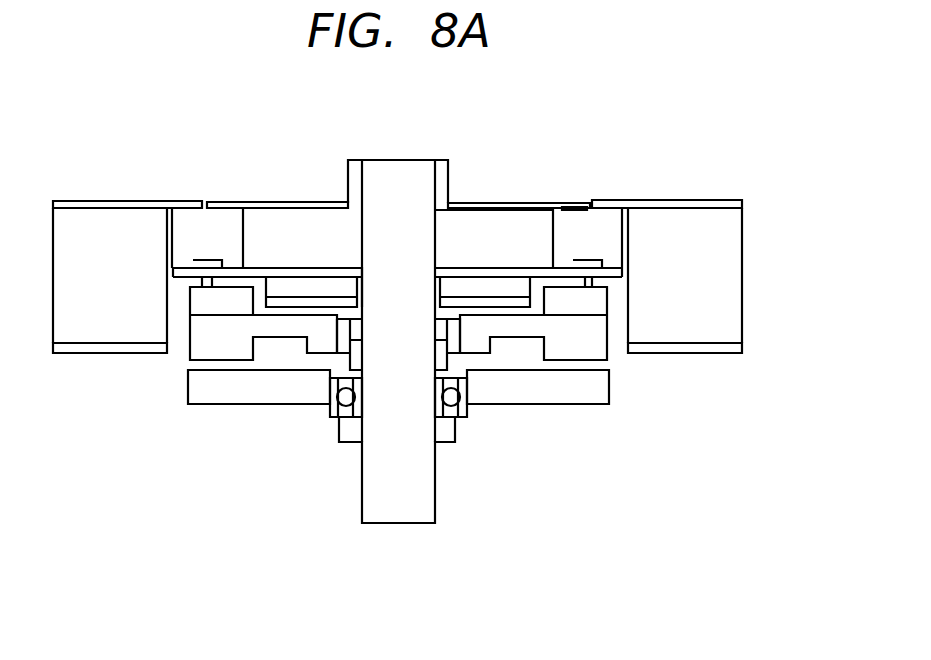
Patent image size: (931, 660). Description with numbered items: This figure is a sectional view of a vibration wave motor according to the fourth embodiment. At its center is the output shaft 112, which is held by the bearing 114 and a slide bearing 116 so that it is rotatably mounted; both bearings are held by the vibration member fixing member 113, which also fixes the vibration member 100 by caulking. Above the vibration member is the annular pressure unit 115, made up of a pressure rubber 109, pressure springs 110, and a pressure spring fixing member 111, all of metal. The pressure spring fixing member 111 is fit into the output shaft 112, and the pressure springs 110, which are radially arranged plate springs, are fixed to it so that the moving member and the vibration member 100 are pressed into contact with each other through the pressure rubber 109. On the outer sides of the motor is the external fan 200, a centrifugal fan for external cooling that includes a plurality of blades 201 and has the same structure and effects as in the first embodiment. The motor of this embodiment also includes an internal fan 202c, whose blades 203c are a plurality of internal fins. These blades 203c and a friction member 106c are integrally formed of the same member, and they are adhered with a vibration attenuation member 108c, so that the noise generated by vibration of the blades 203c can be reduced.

The vibration member 100 is at (185, 357).
The friction member 106c is at (597, 280).
The vibration attenuation member 108c is at (558, 238).
The pressure rubber 109 is at (580, 205).
The pressure springs 110 is at (530, 204).
The pressure spring fixing member 111 is at (440, 178).
The output shaft 112 is at (427, 500).
The vibration member fixing member 113 is at (300, 410).
The bearing 114 is at (460, 410).
The pressure unit 115 is at (653, 113).
The slide bearing 116 is at (443, 330).
The external fan 200 is at (699, 314).
The blades 201 is at (723, 337).
The internal fan 202c is at (365, 307).
The blades 203c is at (325, 283).